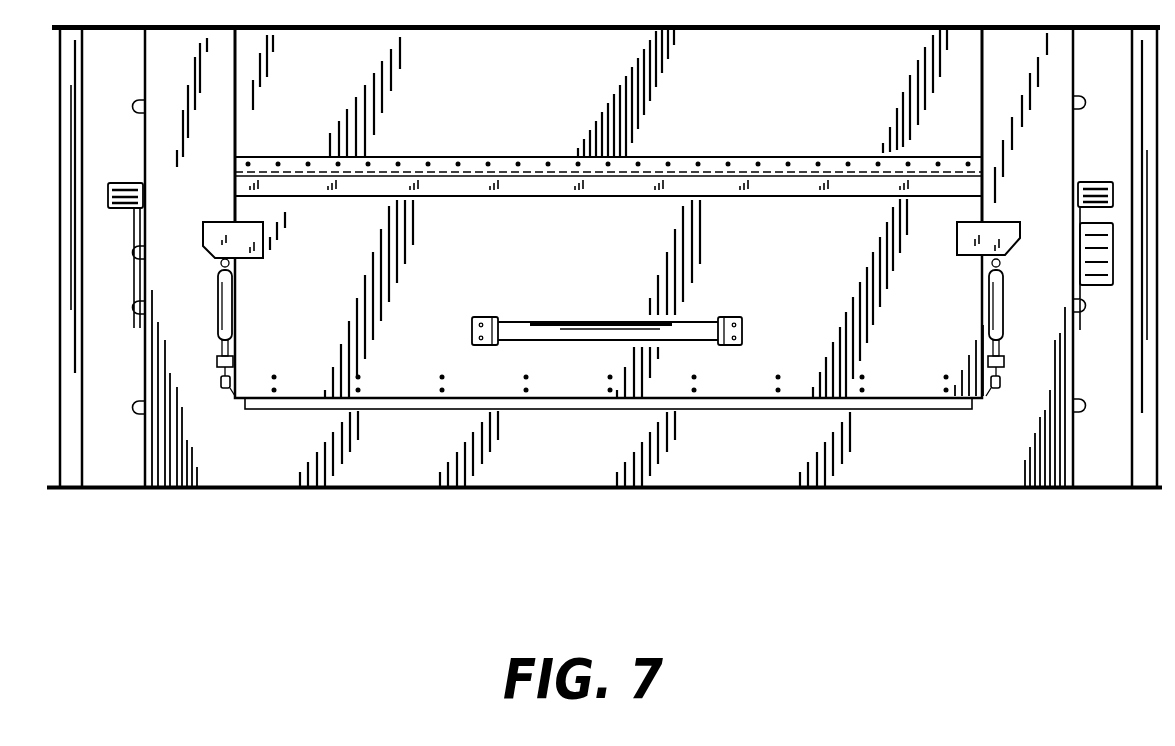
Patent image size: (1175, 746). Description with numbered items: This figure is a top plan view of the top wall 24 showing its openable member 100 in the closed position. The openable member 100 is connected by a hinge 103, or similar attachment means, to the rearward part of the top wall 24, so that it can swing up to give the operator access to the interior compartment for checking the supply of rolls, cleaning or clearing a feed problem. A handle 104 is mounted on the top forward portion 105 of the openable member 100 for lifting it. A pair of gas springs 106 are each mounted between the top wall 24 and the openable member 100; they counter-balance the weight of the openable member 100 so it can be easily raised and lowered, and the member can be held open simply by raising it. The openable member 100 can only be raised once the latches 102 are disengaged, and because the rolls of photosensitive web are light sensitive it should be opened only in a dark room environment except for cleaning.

The top wall 24 is at (729, 490).
The openable member 100 is at (945, 305).
The latches 102 is at (226, 388).
The hinge 103 is at (733, 157).
The handle 104 is at (590, 318).
The top forward portion 105 is at (805, 264).
The gas springs 106 is at (232, 300).